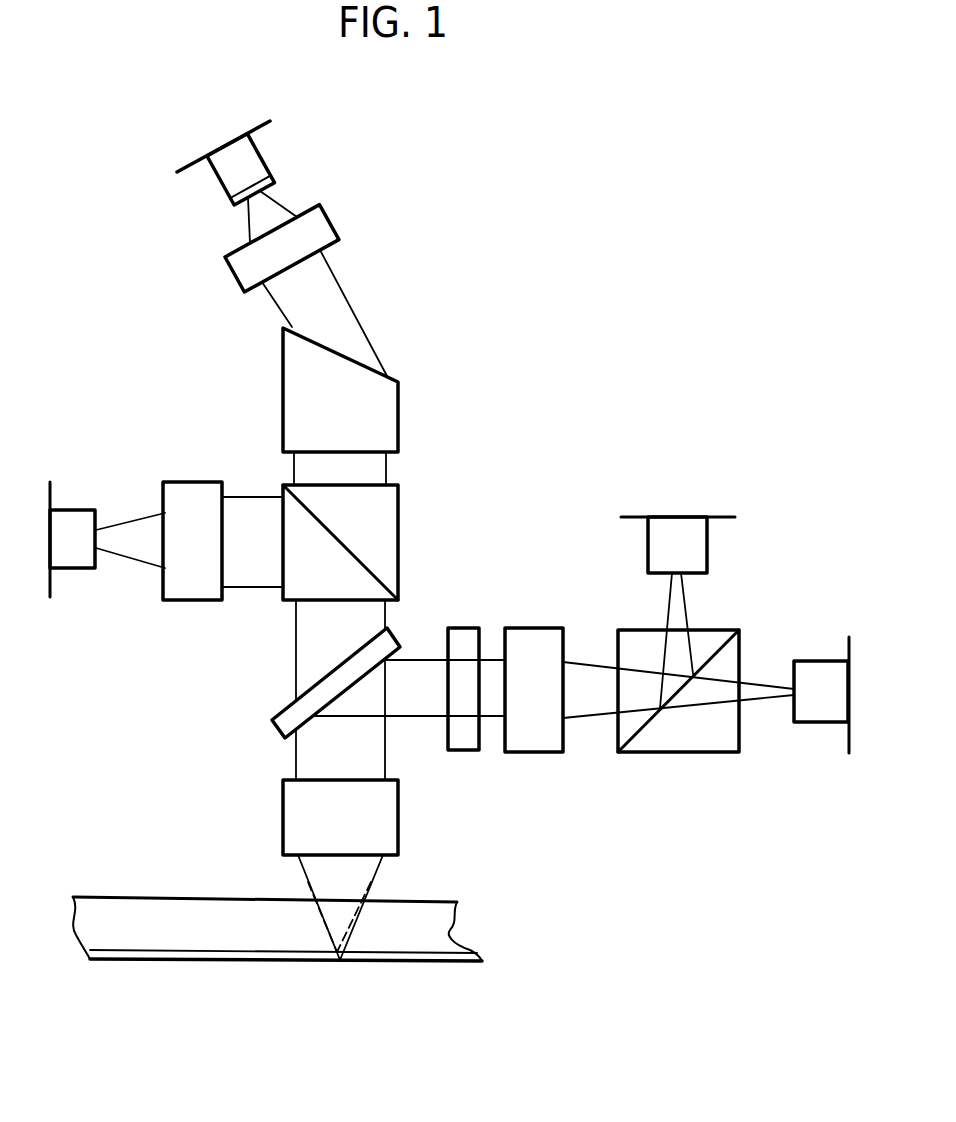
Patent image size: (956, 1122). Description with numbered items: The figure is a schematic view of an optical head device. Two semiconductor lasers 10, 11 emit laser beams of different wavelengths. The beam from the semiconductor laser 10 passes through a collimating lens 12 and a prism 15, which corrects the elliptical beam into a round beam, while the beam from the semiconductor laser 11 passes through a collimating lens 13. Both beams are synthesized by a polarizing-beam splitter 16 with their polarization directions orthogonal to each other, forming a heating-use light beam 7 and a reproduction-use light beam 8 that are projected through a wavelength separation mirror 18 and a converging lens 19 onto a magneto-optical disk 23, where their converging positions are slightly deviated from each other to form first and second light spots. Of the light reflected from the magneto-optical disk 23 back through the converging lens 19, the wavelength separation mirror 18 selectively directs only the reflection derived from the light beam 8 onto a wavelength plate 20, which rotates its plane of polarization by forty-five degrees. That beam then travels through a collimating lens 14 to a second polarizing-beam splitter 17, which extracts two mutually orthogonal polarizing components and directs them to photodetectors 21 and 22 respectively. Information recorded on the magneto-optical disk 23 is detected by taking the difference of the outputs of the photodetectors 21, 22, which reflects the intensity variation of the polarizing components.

The heating-use light beam 7 is at (375, 888).
The reproduction-use light beam 8 is at (307, 884).
The semiconductor laser 10 is at (252, 162).
The semiconductor laser 11 is at (72, 508).
The collimating lens 12 is at (332, 217).
The collimating lens 13 is at (195, 482).
The collimating lens 14 is at (537, 752).
The prism 15 is at (398, 405).
The polarizing-beam splitter 16 is at (398, 520).
The polarizing-beam splitter 17 is at (703, 752).
The wavelength separation mirror 18 is at (280, 708).
The converging lens 19 is at (387, 823).
The wavelength plate 20 is at (463, 750).
The photo-detector 21 is at (662, 517).
The photo-detector 22 is at (818, 722).
The magneto-optical disk 23 is at (458, 923).